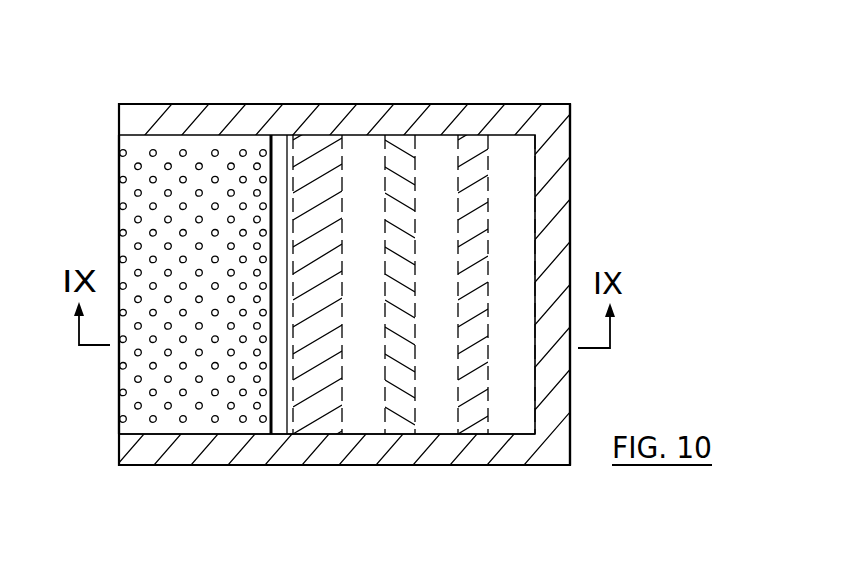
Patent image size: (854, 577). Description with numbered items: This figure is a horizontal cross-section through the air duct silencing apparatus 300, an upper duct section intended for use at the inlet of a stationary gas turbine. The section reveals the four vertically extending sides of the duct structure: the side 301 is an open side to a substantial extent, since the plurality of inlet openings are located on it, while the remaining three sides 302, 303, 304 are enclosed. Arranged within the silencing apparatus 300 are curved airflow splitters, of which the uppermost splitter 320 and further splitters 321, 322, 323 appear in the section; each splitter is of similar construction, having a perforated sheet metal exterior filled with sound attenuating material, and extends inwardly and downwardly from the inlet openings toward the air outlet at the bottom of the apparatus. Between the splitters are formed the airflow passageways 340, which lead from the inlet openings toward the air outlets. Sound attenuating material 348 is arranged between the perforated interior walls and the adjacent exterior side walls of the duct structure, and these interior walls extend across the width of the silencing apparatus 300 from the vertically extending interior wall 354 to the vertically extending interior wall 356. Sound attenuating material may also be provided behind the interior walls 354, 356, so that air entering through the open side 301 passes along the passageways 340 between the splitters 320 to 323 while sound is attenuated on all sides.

The silencing apparatus 300 is at (473, 86).
The open side 301 is at (120, 203).
The enclosed side 302 is at (210, 103).
The enclosed side 303 is at (553, 200).
The enclosed side 304 is at (513, 465).
The airflow splitter 320 is at (488, 185).
The airflow splitter 321 is at (413, 394).
The airflow splitter 322 is at (345, 189).
The airflow splitter 323 is at (118, 247).
The airflow passageway 340 is at (512, 247).
The sound attenuating material 348 is at (560, 402).
The interior wall 354 is at (198, 434).
The interior wall 356 is at (381, 135).